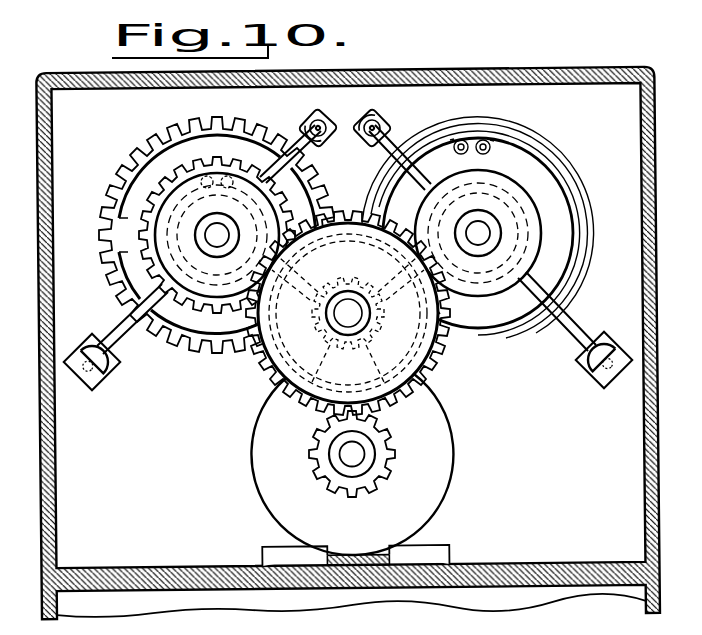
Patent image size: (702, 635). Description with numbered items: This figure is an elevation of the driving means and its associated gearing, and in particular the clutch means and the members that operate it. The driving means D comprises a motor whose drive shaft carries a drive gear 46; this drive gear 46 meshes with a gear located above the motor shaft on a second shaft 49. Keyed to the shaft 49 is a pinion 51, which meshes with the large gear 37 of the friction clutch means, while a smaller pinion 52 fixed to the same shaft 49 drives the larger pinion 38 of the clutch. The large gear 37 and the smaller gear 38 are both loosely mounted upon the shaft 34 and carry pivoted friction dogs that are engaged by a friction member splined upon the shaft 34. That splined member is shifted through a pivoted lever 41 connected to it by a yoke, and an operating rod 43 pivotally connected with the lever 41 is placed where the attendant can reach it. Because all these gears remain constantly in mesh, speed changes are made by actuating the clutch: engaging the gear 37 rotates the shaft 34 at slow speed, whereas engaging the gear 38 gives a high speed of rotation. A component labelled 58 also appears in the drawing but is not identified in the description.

The shaft 34 is at (214, 236).
The large gear 37 is at (121, 287).
The smaller gear 38 is at (219, 318).
The pivoted lever 41 is at (128, 340).
The operating rod 43 is at (324, 119).
The drive gear 46 is at (384, 453).
The shaft 49 is at (348, 313).
The pinion 51 is at (386, 396).
The smaller pinion 52 is at (348, 313).
The gear housing disc 58 is at (442, 378).
The means for operating the rotatable elements D is at (449, 492).